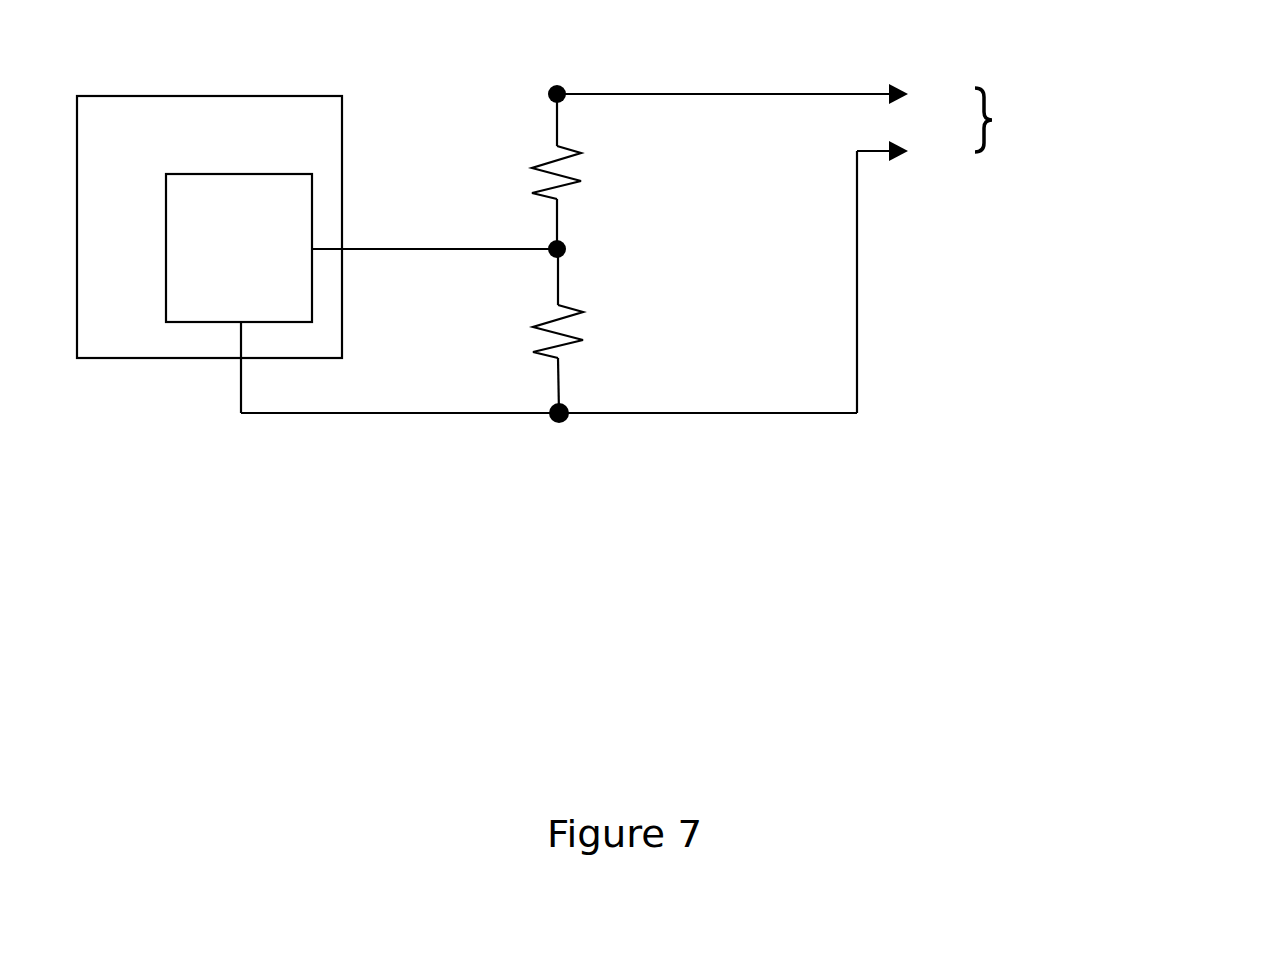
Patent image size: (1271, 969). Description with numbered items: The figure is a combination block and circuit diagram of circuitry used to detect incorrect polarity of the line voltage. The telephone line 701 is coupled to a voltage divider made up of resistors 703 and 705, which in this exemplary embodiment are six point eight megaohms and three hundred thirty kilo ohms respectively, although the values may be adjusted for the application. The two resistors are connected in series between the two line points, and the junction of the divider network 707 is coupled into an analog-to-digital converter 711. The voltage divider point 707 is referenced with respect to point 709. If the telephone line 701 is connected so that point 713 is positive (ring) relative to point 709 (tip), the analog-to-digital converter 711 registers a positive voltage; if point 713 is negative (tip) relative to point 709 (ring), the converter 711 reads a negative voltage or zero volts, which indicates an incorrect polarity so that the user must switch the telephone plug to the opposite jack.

The telephone line 701 is at (1116, 120).
The resistor 703 is at (512, 170).
The resistor 705 is at (512, 332).
The junction of the divider network 707 is at (585, 252).
The point 709 is at (908, 168).
The analog-to-digital converter 711 is at (233, 166).
The point 713 is at (902, 72).